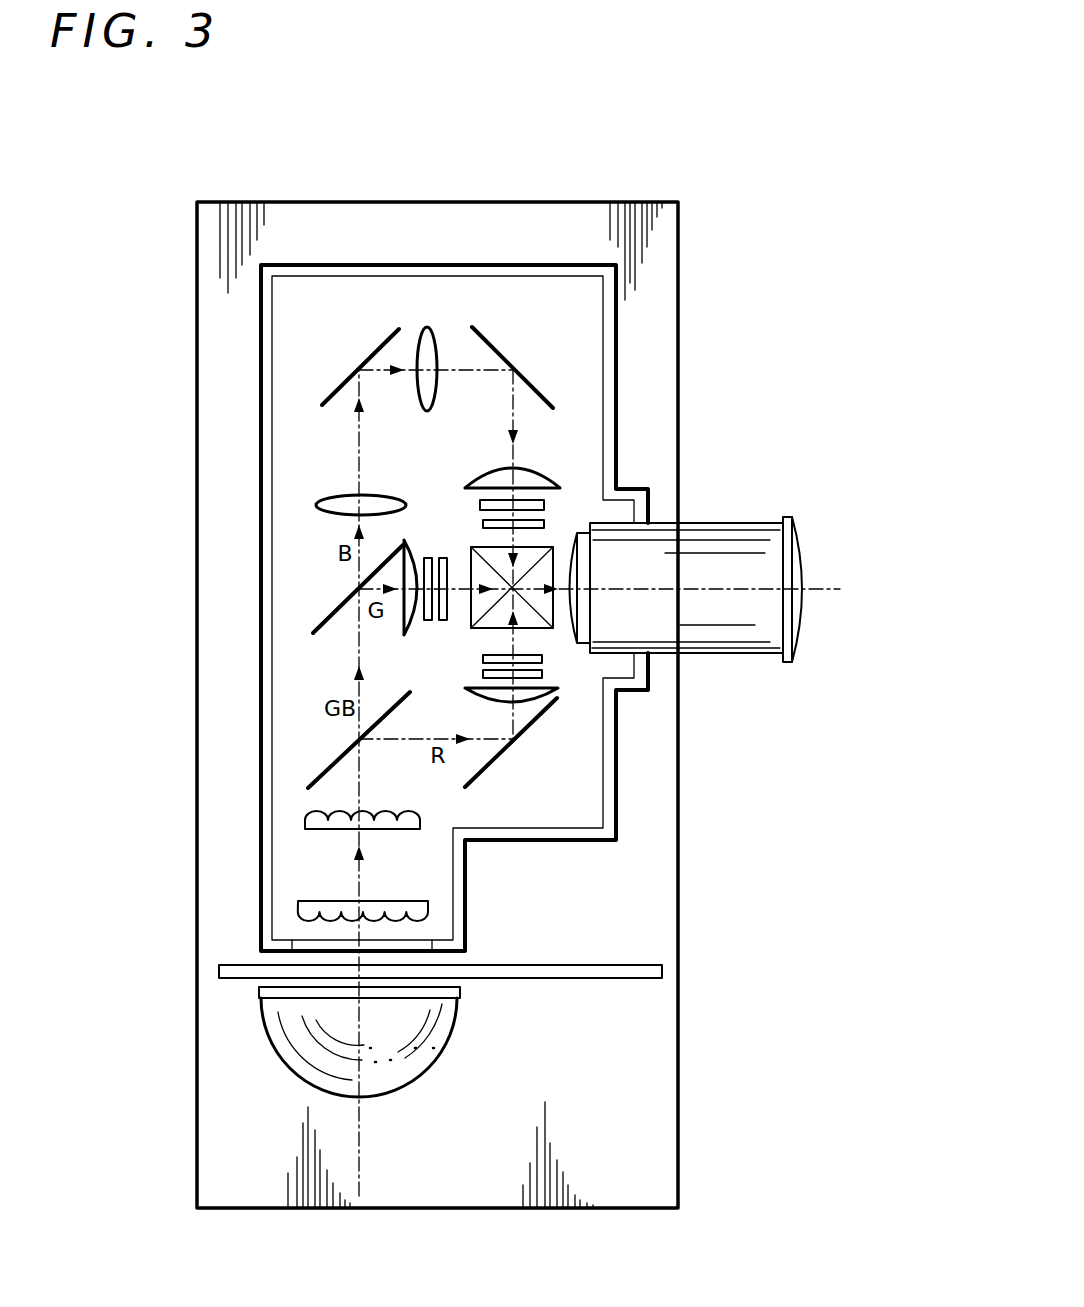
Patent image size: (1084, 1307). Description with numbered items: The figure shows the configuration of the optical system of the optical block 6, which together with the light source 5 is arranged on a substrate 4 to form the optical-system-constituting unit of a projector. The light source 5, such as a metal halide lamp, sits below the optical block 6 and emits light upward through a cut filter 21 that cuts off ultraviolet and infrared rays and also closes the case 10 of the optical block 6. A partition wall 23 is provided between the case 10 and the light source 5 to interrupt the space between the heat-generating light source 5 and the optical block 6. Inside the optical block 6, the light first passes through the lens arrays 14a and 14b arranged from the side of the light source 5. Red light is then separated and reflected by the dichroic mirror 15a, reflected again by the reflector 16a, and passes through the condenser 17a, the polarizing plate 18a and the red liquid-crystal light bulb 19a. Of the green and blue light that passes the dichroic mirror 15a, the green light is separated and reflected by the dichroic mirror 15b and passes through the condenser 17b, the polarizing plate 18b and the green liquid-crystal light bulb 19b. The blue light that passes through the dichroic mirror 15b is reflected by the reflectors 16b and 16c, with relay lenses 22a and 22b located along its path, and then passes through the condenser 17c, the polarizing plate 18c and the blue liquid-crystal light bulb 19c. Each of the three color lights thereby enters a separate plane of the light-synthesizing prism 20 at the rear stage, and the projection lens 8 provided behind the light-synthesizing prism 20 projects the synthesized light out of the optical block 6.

The substrate 4 is at (678, 1096).
The light source 5 is at (410, 1062).
The optical block 6 is at (530, 265).
The projection lens 8 is at (757, 653).
The case 10 is at (616, 368).
The lens array 14a is at (300, 893).
The lens array 14b is at (305, 838).
The dichroic mirror 15a is at (327, 773).
The dichroic mirror 15b is at (320, 622).
The reflector 16a is at (488, 774).
The reflector 16b is at (346, 380).
The reflector 16c is at (498, 348).
The condenser 17a is at (527, 703).
The condenser 17b is at (404, 577).
The condenser 17c is at (558, 470).
The polarizing plate 18a is at (545, 676).
The polarizing plate 18b is at (428, 557).
The polarizing plate 18c is at (490, 500).
The red liquid-crystal light bulb 19a is at (545, 661).
The green liquid-crystal light bulb 19b is at (443, 621).
The blue liquid-crystal light bulb 19c is at (545, 524).
The light-synthesizing prism 20 is at (556, 550).
The cut filter 21 is at (320, 943).
The relay lens 22a is at (337, 499).
The relay lens 22b is at (427, 326).
The partition wall 23 is at (583, 979).